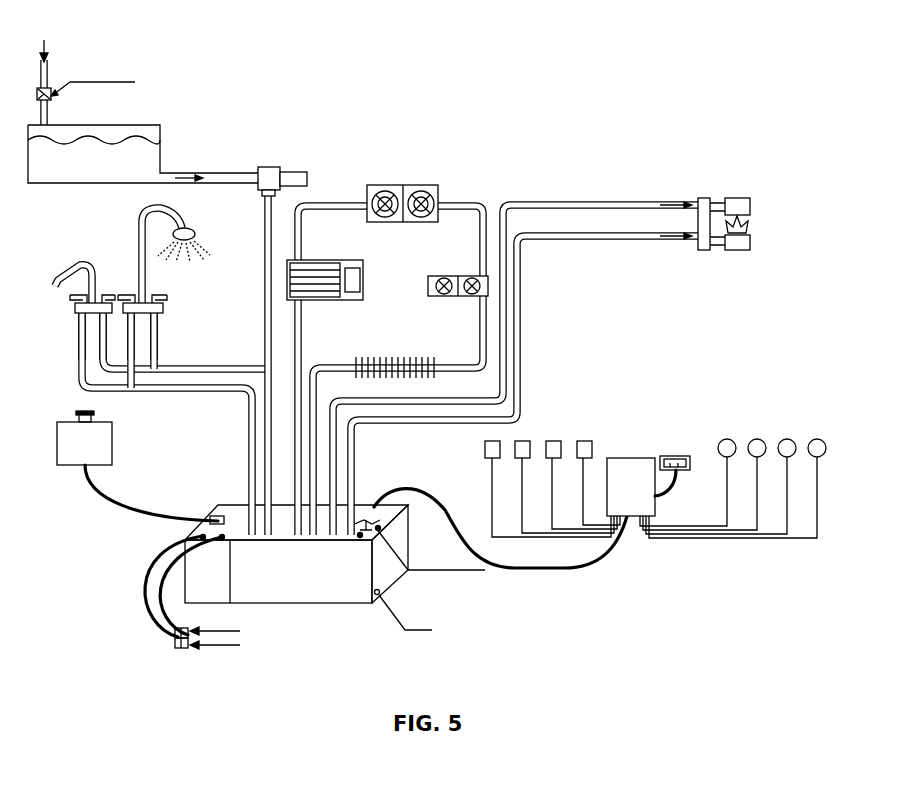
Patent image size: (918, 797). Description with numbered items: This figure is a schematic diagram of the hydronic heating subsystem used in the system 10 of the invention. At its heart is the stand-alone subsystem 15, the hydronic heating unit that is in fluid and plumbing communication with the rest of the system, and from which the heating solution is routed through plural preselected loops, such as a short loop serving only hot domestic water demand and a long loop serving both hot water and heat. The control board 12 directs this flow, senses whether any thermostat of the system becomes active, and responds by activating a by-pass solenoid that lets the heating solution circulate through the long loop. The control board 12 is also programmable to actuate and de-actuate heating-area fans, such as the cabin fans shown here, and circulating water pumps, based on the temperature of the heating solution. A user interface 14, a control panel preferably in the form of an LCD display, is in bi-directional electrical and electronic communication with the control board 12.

The system 10 is at (424, 373).
The control board 12 is at (629, 455).
The user interface 14 is at (695, 441).
The stand-alone subsystem 15 is at (343, 612).